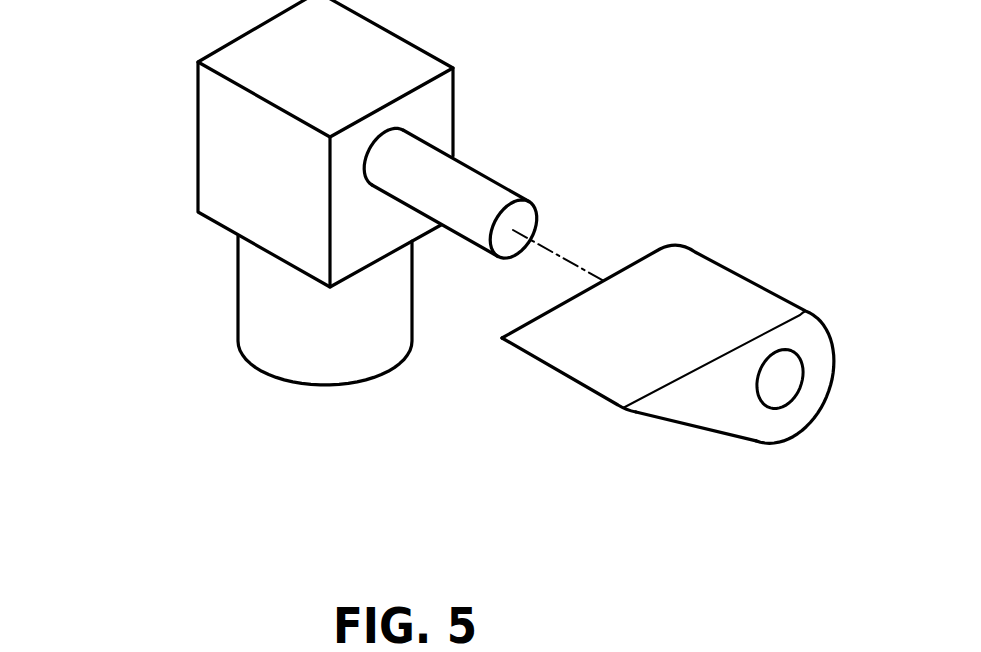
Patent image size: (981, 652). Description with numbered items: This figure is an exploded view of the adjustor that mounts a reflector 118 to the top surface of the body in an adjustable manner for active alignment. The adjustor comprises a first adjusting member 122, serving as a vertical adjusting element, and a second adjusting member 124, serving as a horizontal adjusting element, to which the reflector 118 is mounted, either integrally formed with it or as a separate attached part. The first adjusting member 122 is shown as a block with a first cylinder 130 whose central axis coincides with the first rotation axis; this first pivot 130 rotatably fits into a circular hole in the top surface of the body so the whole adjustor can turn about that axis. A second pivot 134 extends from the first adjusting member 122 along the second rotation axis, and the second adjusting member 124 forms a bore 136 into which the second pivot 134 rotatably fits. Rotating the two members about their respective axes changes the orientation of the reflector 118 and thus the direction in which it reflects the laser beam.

The reflector 118 is at (713, 437).
The first adjusting member 122 is at (197, 147).
The second adjusting member 124 is at (768, 284).
The first cylinder 130 is at (267, 302).
The second pivot 134 is at (457, 187).
The bore 136 is at (785, 393).